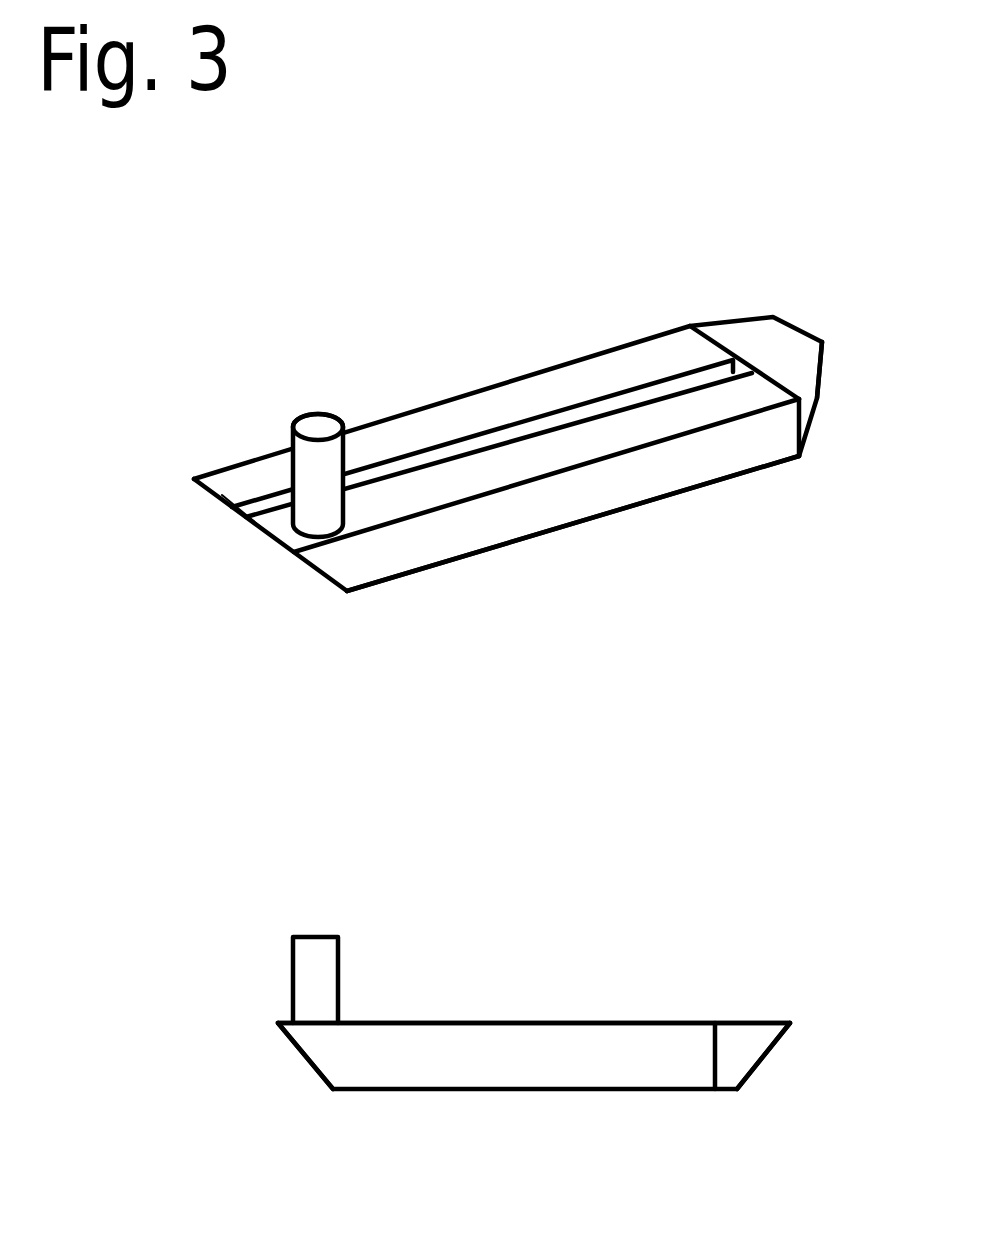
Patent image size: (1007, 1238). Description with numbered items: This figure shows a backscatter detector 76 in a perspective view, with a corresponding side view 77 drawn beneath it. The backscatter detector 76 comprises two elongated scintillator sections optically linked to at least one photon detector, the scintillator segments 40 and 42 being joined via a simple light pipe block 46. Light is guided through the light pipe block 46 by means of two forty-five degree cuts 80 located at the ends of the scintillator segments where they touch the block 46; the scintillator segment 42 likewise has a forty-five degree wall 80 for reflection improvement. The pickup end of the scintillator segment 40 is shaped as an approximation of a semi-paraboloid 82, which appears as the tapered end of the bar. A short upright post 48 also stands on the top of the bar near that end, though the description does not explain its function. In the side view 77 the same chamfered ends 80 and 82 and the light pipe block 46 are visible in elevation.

The scintillator segment 40 is at (458, 525).
The scintillator segment 42 is at (530, 395).
The light pipe block 46 is at (732, 333).
The post 48 is at (282, 453).
The backscatter detector 76 is at (680, 490).
The side view of the detector 77 is at (428, 1022).
The 45 degree cut 80 is at (818, 392).
The semi-paraboloid 82 is at (296, 553).